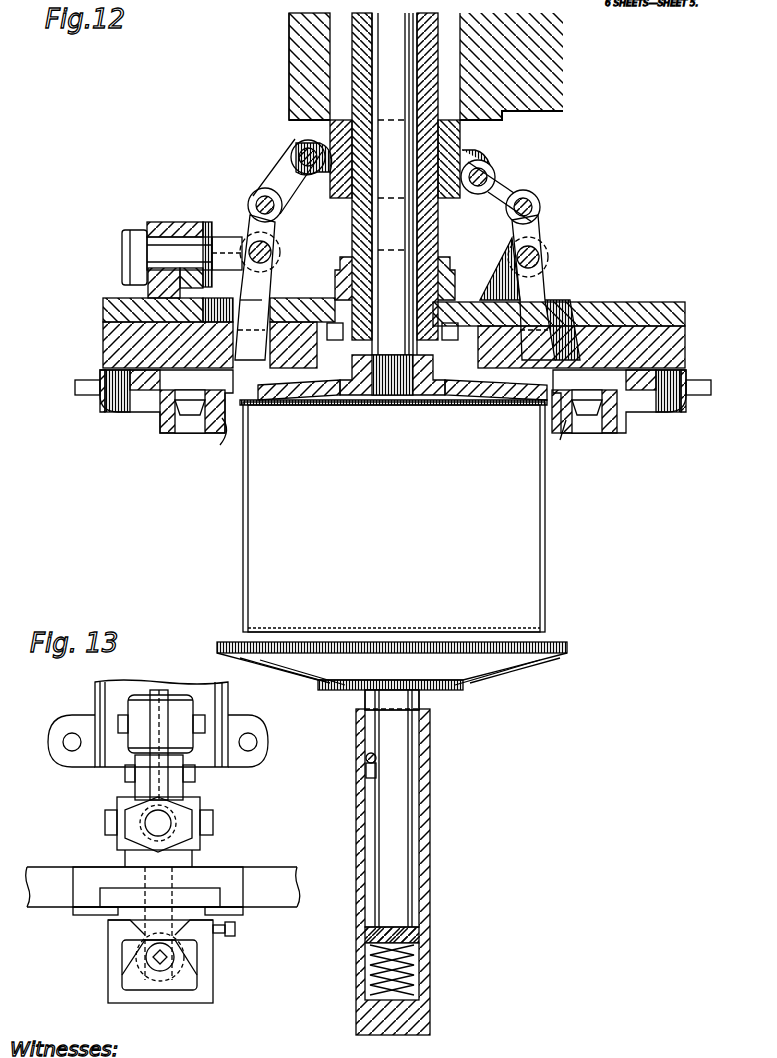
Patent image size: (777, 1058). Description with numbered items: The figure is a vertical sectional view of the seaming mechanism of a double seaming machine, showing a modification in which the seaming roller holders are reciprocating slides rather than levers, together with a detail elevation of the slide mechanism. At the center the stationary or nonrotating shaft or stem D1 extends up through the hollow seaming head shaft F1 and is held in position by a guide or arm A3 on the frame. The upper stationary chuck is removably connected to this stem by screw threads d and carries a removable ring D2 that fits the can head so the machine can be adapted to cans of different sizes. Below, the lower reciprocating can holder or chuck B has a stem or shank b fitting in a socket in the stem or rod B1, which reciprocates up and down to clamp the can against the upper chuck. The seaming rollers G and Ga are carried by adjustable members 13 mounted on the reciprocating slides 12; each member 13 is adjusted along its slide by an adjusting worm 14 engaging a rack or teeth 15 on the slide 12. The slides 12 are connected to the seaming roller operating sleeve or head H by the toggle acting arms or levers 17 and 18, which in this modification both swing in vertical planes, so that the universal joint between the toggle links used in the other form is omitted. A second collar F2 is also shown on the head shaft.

In FIG. 12, the reciprocating slide 12 is at (102, 332).
In FIG. 13, the reciprocating slide 12 is at (108, 925).
In FIG. 12, the adjustable member 13 is at (160, 430).
In FIG. 13, the adjustable member 13 is at (160, 1003).
In FIG. 12, the adjusting worm 14 is at (106, 420).
In FIG. 13, the adjusting worm 14 is at (200, 1003).
In FIG. 12, the rack or teeth 15 is at (102, 363).
In FIG. 12, the toggle acting arm or lever 17 is at (292, 198).
In FIG. 13, the toggle acting arm or lever 17 is at (158, 690).
In FIG. 12, the toggle acting arm or lever 18 is at (283, 247).
In FIG. 13, the toggle acting arm or lever 18 is at (185, 788).
In FIG. 12, the guide or arm A3 is at (565, 73).
In FIG. 12, the seaming roller operating sleeve or head H is at (462, 135).
In FIG. 13, the seaming roller operating sleeve or head H is at (230, 700).
In FIG. 12, the stationary or nonrotating shaft or stem D1 is at (400, 282).
In FIG. 12, the hollow seaming head shaft F1 is at (308, 296).
In FIG. 12, the collar F'' F2 is at (437, 240).
In FIG. 12, the seaming roller Ga is at (215, 442).
In FIG. 12, the seaming roller G is at (562, 439).
In FIG. 12, the screw threads d is at (390, 397).
In FIG. 12, the removable ring D2 is at (265, 405).
In FIG. 12, the lower reciprocating can holder or chuck B is at (568, 648).
In FIG. 12, the stem or rod B1 is at (432, 790).
In FIG. 12, the stem or shank b is at (395, 732).